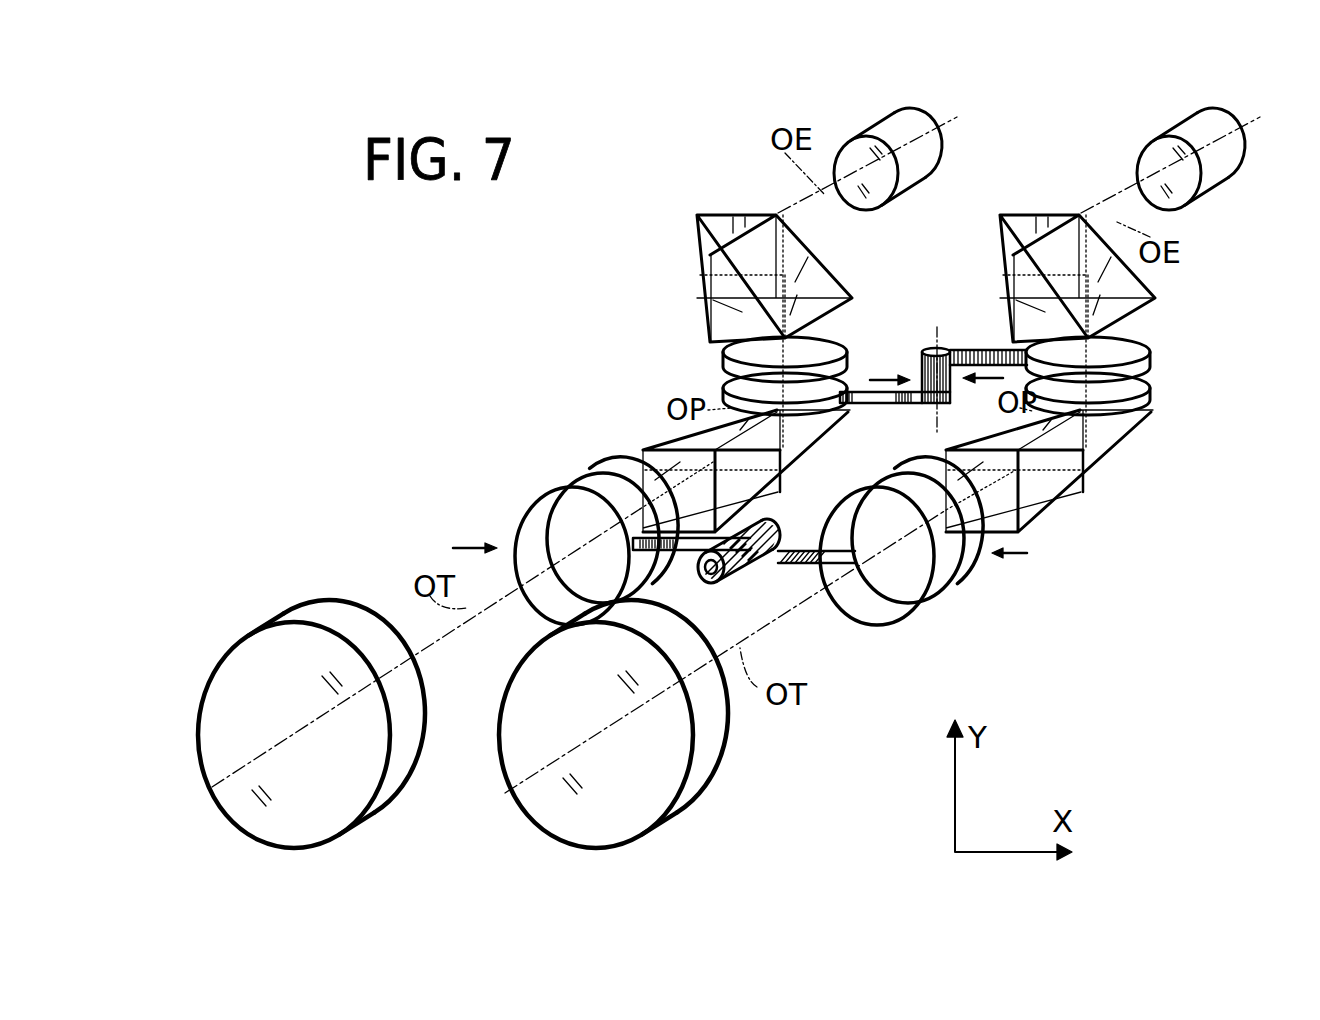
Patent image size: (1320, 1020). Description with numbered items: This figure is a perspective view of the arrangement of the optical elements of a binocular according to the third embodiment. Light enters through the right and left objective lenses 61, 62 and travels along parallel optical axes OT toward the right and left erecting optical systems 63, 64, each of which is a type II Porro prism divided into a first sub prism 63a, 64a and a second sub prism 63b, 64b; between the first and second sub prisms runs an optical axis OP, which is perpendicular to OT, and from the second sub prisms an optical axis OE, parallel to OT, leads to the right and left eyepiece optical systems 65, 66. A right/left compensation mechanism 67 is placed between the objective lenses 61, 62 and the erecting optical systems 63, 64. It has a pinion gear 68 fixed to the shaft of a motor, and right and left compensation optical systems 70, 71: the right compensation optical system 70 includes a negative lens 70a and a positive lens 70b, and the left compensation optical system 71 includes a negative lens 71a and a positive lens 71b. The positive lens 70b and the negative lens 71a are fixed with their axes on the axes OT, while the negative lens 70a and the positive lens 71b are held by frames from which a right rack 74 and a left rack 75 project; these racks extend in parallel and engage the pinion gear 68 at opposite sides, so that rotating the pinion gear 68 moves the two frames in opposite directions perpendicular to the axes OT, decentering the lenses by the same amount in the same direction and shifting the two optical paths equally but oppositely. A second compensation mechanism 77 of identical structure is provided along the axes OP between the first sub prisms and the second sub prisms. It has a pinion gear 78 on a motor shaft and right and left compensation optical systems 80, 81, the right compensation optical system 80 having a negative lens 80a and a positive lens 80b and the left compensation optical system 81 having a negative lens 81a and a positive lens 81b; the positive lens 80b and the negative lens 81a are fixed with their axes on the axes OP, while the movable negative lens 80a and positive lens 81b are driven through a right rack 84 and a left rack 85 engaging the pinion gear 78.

The right objective lens 61 is at (253, 796).
The left objective lens 62 is at (555, 795).
The right erecting optical system 63 is at (702, 373).
The first sub prism 63a is at (645, 448).
The second sub prism 63b is at (712, 308).
The left erecting optical system 64 is at (1128, 373).
The first sub prism 64a is at (1152, 413).
The second sub prism 64b is at (1150, 318).
The right eyepiece optical system 65 is at (885, 132).
The left eyepiece optical system 66 is at (1188, 132).
The right/left compensation mechanism 67 is at (826, 612).
The pinion gear 68 is at (743, 560).
The right compensation optical system 70 is at (573, 506).
The negative lens 70a is at (577, 482).
The positive lens 70b is at (598, 462).
The left compensation optical system 71 is at (972, 561).
The negative lens 71a is at (935, 580).
The positive lens 71b is at (972, 567).
The right rack 74 is at (700, 573).
The left rack 75 is at (803, 542).
The compensation mechanism 77 is at (948, 292).
The pinion gear 78 is at (922, 360).
The right compensation optical system 80 is at (840, 320).
The negative lens 80a is at (830, 364).
The positive lens 80b is at (808, 343).
The left compensation optical system 81 is at (1140, 430).
The negative lens 81a is at (1107, 420).
The positive lens 81b is at (1118, 420).
The right rack 84 is at (870, 396).
The left rack 85 is at (966, 350).